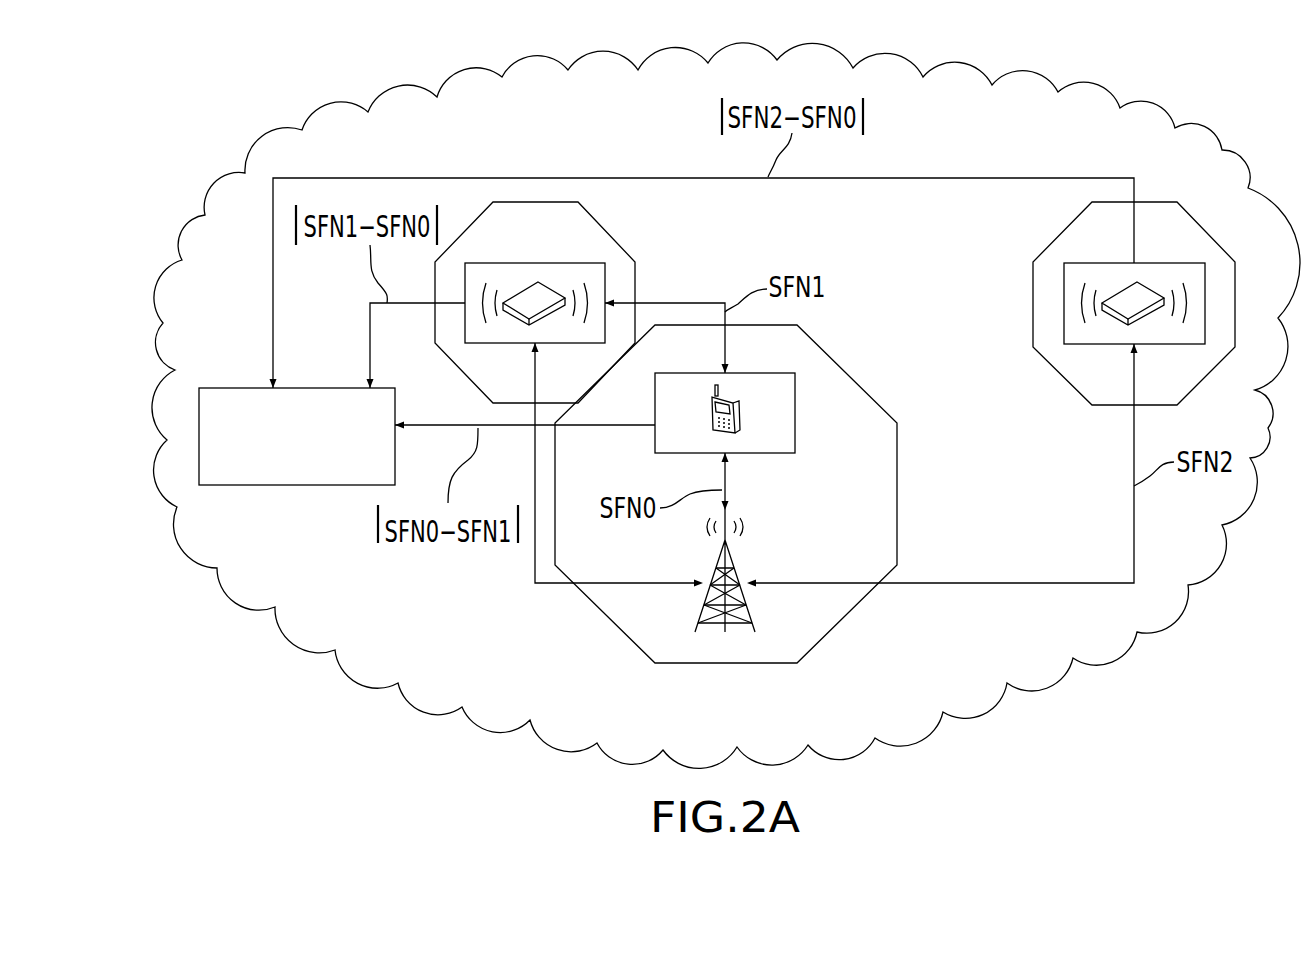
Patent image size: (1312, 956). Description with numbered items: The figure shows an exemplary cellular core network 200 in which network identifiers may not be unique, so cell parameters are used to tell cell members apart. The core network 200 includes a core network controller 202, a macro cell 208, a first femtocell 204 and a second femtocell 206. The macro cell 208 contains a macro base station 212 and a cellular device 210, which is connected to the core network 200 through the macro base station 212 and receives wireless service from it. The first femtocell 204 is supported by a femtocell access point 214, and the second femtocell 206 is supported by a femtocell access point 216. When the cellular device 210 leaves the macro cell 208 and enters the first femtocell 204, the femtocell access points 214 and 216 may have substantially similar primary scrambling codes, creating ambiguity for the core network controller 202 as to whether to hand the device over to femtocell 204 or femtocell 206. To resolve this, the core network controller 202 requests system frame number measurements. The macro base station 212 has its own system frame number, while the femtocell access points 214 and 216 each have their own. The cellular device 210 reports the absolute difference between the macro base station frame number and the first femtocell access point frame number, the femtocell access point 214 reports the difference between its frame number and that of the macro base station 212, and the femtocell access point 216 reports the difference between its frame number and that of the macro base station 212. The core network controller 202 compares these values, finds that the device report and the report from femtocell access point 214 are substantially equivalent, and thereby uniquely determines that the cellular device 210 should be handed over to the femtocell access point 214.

The core network 200 is at (244, 116).
The core network controller 202 is at (295, 486).
The first femtocell 204 is at (636, 285).
The second femtocell 206 is at (1062, 375).
The macro cell 208 is at (897, 490).
The cellular device 210 is at (797, 425).
The macro base station 212 is at (725, 635).
The femtocell access point 214 is at (576, 263).
The femtocell access point 216 is at (1064, 303).